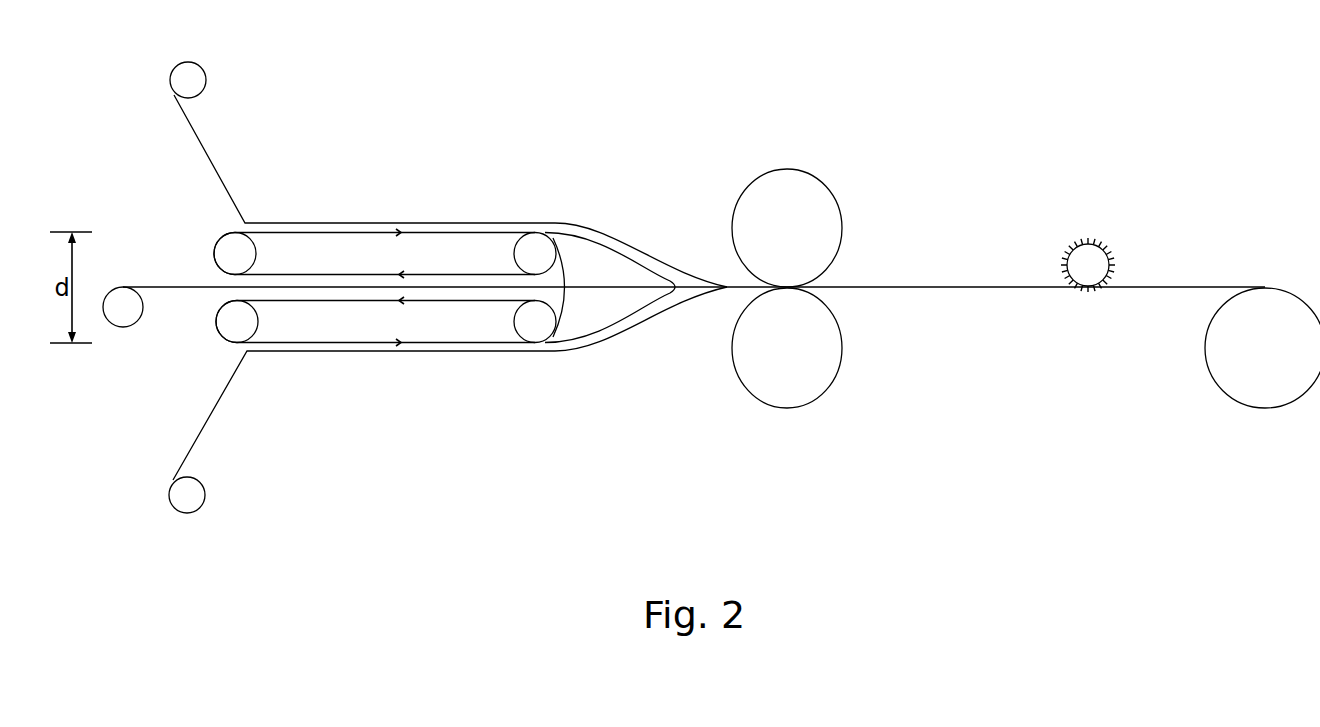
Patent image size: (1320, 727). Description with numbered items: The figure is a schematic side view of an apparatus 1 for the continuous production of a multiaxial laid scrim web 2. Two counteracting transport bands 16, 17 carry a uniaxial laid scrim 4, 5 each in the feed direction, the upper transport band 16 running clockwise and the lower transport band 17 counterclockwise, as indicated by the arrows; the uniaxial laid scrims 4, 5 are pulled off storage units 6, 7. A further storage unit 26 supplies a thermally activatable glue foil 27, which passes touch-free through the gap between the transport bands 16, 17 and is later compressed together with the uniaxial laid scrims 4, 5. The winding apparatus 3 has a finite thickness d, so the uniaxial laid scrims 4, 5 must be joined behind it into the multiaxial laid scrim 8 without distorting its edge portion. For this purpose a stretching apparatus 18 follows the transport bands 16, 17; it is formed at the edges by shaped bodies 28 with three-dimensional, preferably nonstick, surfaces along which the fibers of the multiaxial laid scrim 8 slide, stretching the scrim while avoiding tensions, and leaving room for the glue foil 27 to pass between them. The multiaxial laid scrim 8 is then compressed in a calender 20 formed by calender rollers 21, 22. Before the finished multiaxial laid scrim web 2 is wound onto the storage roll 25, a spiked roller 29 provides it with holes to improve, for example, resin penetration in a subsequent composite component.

The apparatus 1 is at (605, 478).
The multiaxial laid scrim web 2 is at (942, 287).
The winding apparatus 3 is at (470, 279).
The uniaxial laid scrim 4 is at (217, 163).
The uniaxial laid scrim 5 is at (222, 400).
The storage unit 6 is at (195, 70).
The storage unit 7 is at (187, 505).
The multiaxial laid scrim 8 is at (703, 272).
The transport band 16 is at (441, 222).
The transport band 17 is at (441, 353).
The stretching apparatus 18 is at (600, 238).
The calender 20 is at (815, 244).
The calender roller 21 is at (815, 198).
The calender roller 22 is at (815, 368).
The storage roll 25 is at (1245, 378).
The storage unit 26 is at (122, 333).
The glue foil 27 is at (160, 287).
The shaped body 28 is at (585, 308).
The spiked roller 29 is at (1084, 265).